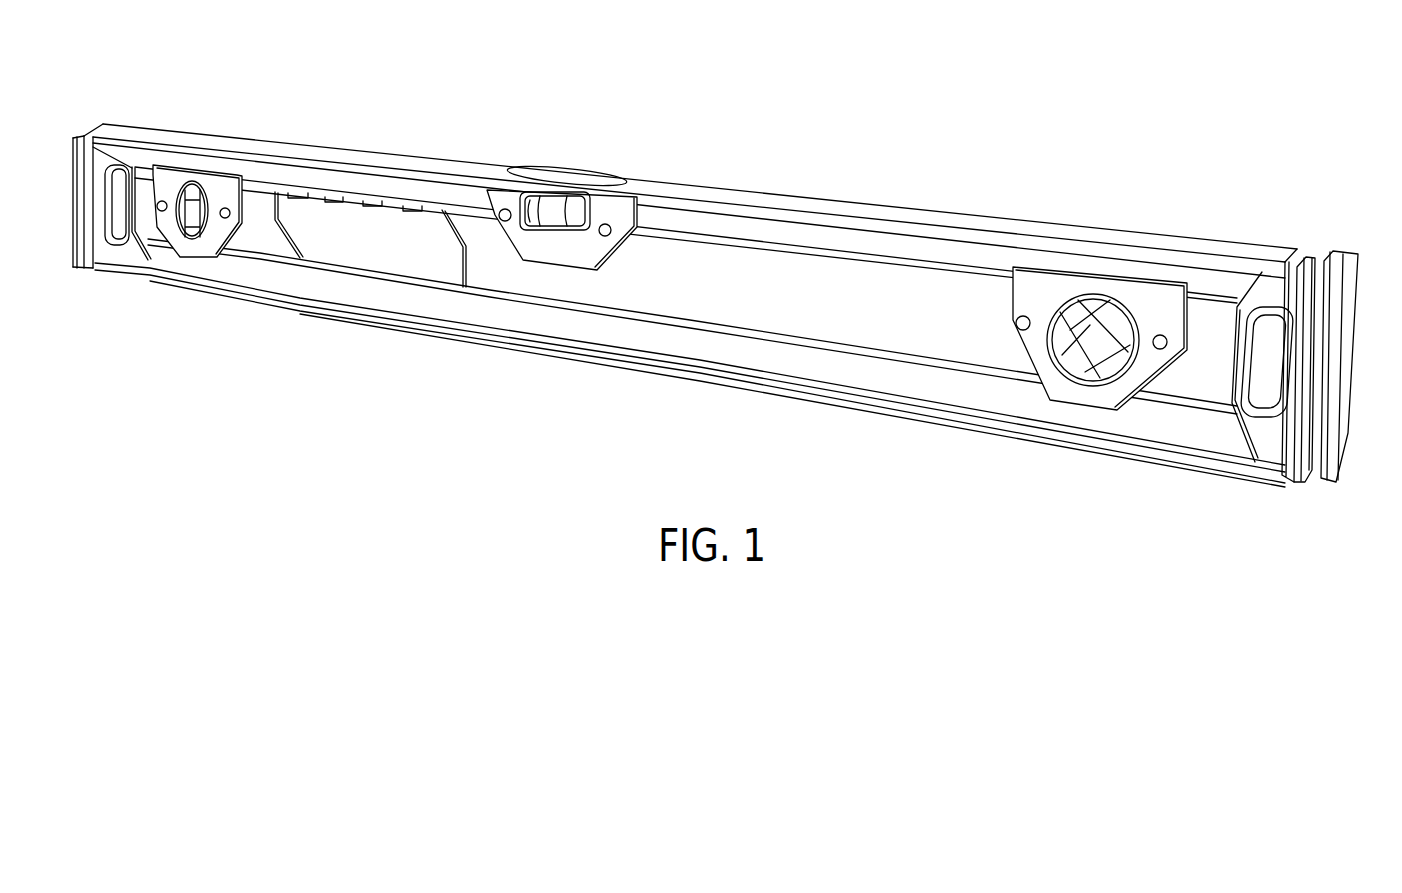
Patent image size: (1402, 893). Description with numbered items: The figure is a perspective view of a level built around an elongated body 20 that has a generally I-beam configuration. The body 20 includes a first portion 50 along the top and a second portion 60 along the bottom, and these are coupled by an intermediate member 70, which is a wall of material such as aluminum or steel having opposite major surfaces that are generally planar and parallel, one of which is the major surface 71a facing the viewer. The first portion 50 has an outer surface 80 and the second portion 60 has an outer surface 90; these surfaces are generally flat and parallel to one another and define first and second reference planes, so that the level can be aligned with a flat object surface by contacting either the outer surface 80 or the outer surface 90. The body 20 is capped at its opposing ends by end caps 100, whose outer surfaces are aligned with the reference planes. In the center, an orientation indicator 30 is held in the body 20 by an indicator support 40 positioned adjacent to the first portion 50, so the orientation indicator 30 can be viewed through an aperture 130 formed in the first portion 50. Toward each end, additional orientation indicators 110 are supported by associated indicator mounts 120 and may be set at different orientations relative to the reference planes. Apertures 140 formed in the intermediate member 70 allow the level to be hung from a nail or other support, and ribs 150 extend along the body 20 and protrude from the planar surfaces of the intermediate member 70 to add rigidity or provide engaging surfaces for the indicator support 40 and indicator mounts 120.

The body 20 is at (622, 283).
The orientation indicator 30 is at (560, 205).
The indicator support 40 is at (563, 255).
The first portion 50 is at (773, 210).
The second portion 60 is at (795, 386).
The intermediate member 70 is at (806, 311).
The major surface 71a is at (968, 323).
The outer surface 80 is at (860, 196).
The outer surface 90 is at (865, 418).
The end cap 100 is at (73, 150).
The additional orientation indicator 110 is at (190, 222).
The indicator mount 120 is at (218, 190).
The aperture 130 is at (543, 178).
The aperture 140 is at (122, 215).
The rib 150 is at (458, 207).